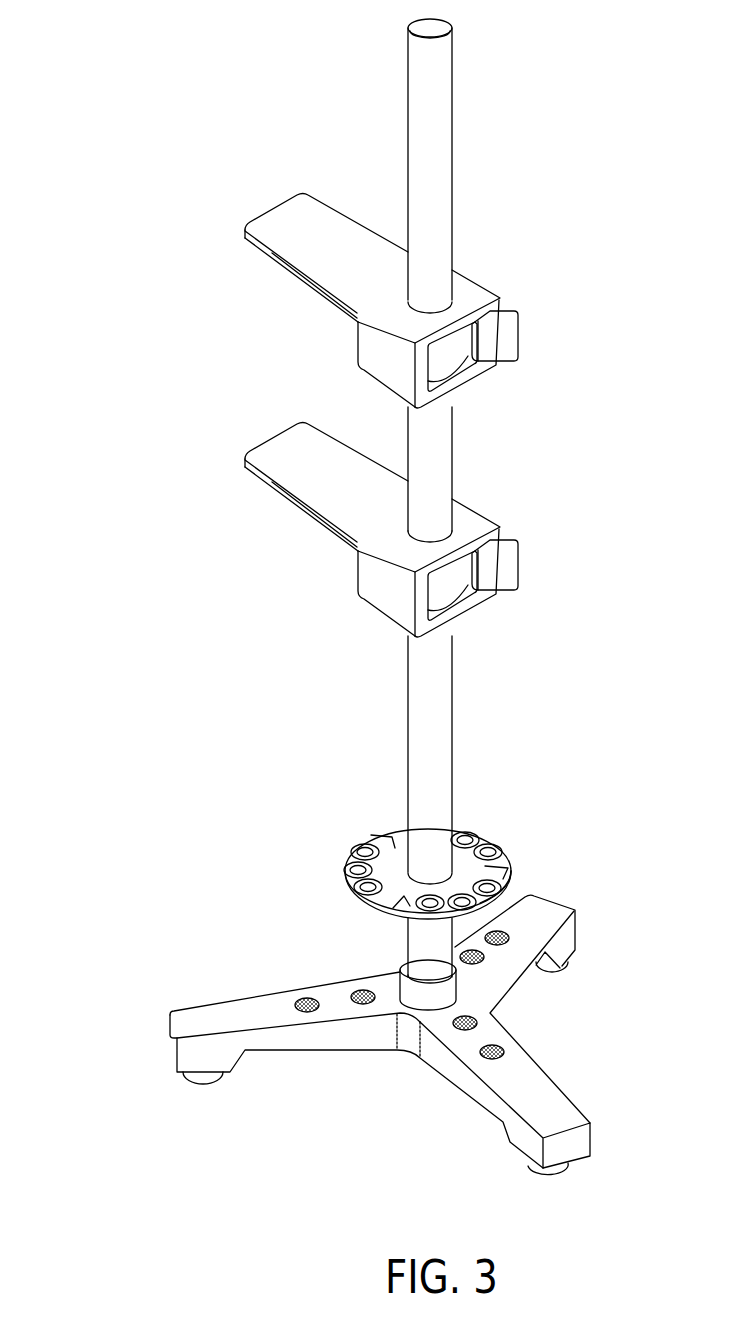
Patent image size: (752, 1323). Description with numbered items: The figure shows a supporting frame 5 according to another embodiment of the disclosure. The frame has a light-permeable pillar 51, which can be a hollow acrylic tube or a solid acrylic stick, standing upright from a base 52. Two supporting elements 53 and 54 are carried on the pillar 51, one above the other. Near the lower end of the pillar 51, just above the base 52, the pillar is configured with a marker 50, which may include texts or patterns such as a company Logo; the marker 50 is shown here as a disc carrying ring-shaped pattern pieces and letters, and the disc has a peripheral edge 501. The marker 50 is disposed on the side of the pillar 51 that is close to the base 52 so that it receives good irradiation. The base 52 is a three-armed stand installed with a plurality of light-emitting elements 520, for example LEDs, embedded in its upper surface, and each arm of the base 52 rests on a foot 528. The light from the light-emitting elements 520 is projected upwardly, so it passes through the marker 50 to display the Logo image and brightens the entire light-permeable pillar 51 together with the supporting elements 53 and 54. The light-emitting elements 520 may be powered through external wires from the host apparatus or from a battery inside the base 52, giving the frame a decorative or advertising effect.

The supporting frame 5 is at (118, 90).
The light-permeable pillar 51 is at (462, 128).
The supporting element 53 is at (517, 298).
The supporting element 54 is at (517, 527).
The marker 50 is at (485, 835).
The disc edge 501 is at (504, 870).
The base 52 is at (222, 990).
The light-emitting element 520 is at (360, 990).
The feet 528 is at (207, 1078).